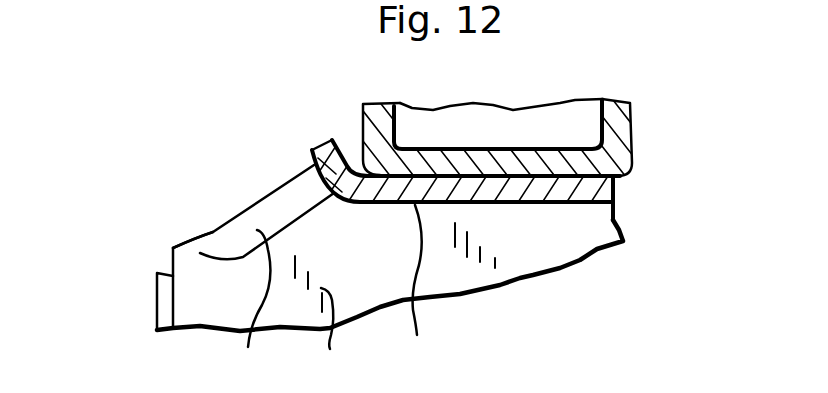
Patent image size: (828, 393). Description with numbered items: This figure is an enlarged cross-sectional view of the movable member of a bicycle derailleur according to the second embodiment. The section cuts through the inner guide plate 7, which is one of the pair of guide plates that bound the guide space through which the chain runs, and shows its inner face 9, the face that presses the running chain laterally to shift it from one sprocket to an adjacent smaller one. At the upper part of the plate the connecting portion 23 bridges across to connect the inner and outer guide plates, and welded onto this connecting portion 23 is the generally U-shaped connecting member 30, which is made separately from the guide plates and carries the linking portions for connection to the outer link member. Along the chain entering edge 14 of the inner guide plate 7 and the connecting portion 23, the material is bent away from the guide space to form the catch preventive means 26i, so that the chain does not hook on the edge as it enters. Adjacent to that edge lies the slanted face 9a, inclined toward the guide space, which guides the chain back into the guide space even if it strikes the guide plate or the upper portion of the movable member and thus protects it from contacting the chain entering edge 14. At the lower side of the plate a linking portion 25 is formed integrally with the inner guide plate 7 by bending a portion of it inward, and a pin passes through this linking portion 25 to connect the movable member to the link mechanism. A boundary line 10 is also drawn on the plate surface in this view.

The inner guide plate 7 is at (620, 216).
The inner face 9 is at (333, 338).
The slanted face 9a is at (254, 309).
The boundary line 10 is at (432, 286).
The chain entering edge 14 is at (330, 141).
The connecting portion 23 is at (527, 150).
The linking portion 25 is at (157, 295).
The catch preventive means 26i is at (210, 226).
The connecting member 30 is at (637, 123).